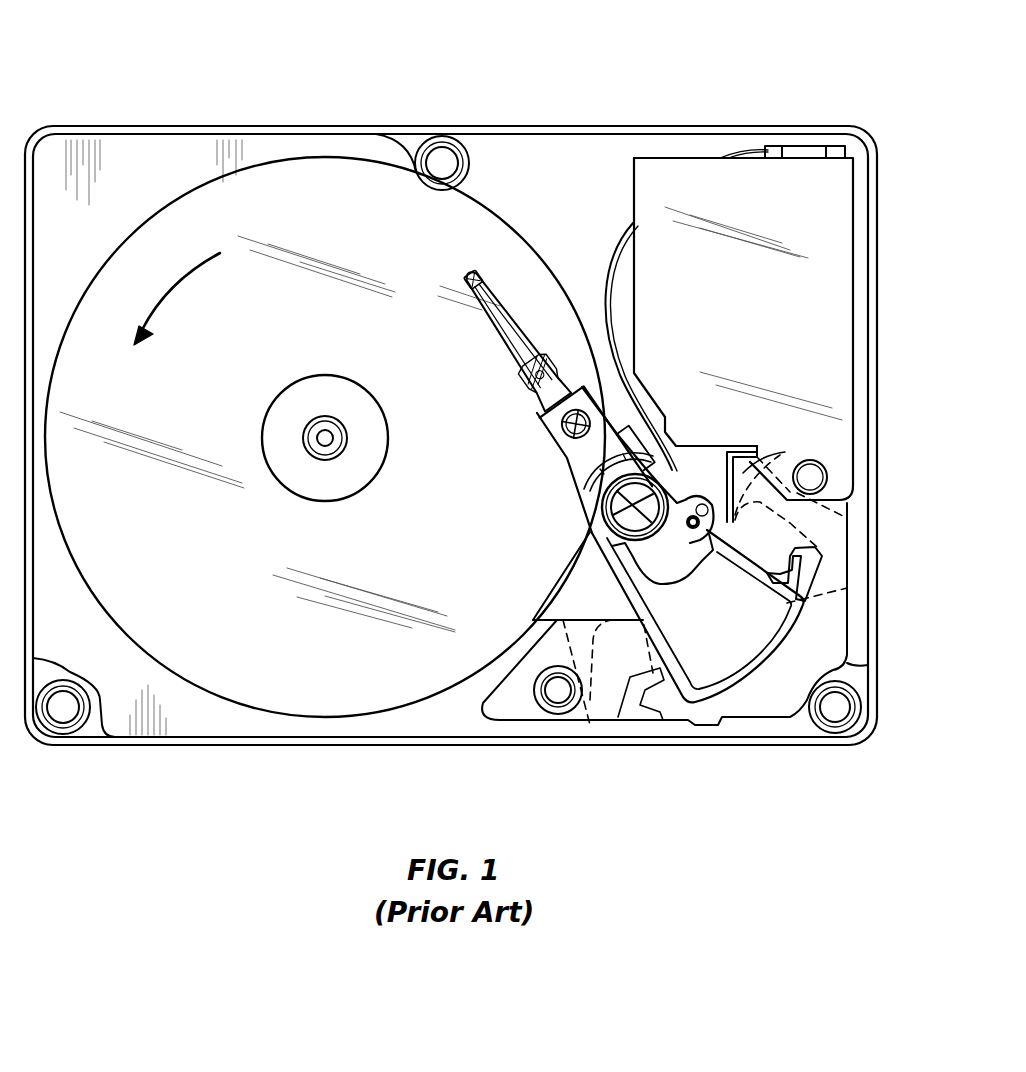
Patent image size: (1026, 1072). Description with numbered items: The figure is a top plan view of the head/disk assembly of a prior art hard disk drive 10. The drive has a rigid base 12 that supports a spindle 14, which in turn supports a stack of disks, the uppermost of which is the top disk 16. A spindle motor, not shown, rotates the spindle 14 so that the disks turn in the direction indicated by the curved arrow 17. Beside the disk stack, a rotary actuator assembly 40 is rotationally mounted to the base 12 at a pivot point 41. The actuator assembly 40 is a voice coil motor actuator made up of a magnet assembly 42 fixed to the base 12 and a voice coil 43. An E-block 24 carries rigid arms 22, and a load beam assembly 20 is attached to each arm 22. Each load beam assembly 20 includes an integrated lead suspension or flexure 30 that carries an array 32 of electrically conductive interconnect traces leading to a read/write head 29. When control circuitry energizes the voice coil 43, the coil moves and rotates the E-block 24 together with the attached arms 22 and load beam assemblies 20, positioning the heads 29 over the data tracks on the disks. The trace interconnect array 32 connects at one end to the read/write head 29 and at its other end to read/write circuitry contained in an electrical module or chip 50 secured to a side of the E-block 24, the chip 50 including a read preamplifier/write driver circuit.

The hard disk drive 10 is at (113, 62).
The rigid base 12 is at (195, 745).
The spindle 14 is at (328, 372).
The top disk 16 is at (480, 206).
The curved arrow 17 is at (178, 286).
The load beam assembly 20 is at (513, 379).
The rigid arm 22 is at (318, 695).
The E-block 24 is at (577, 488).
The read/write head 29 is at (444, 265).
The integrated lead suspension (flexure) 30 is at (490, 284).
The trace interconnect array 32 is at (517, 322).
The rotary actuator assembly 40 is at (582, 570).
The pivot point 41 is at (590, 532).
The magnet assembly 42 is at (748, 508).
The voice coil 43 is at (802, 602).
The electrical module or chip 50 is at (688, 446).